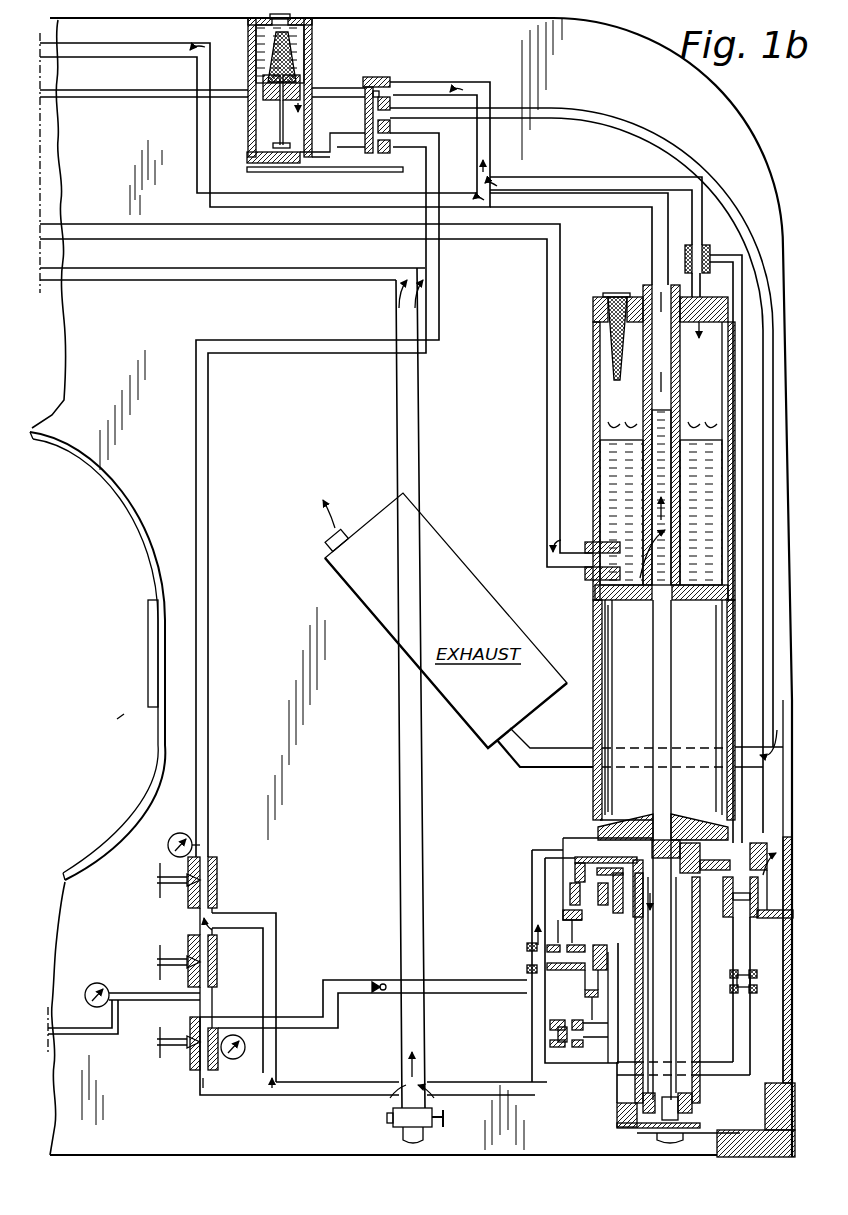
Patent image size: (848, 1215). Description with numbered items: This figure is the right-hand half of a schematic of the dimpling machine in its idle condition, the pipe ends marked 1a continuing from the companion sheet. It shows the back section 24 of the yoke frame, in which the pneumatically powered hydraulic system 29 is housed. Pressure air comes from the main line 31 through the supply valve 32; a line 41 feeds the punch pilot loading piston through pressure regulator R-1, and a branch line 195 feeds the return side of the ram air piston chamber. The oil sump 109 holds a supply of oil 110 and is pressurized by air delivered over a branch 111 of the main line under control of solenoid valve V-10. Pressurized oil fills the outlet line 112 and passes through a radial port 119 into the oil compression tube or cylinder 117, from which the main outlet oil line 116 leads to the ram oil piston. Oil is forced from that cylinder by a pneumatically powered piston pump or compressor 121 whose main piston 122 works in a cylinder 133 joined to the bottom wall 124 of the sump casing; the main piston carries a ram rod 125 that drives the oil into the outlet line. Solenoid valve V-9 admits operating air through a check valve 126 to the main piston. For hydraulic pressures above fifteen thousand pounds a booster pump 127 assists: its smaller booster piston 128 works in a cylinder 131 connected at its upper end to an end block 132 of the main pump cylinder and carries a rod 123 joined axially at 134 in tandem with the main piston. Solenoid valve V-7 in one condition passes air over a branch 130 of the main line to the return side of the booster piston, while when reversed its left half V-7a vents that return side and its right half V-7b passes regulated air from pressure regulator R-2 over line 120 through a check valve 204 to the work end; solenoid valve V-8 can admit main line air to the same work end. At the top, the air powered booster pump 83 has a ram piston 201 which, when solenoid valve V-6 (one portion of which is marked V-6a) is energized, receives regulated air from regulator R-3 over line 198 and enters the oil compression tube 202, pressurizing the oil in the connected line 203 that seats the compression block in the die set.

The section line 1a is at (40, 33).
The back section 24 is at (116, 480).
The hydraulic system 29 is at (604, 290).
The main line 31 is at (426, 1031).
The supply valve 32 is at (395, 1128).
The line 41 is at (92, 1033).
The booster pump 83 is at (320, 80).
The oil sump 109 is at (593, 372).
The supply of oil 110 is at (616, 473).
The branch 111 is at (648, 179).
The outlet line 112 is at (547, 297).
The main outlet oil line 116 is at (651, 226).
The oil compression tube or cylinder 117 is at (682, 381).
The radial port 119 is at (615, 678).
The line 120 is at (324, 982).
The piston pump or compressor 121 is at (591, 661).
The main piston 122 is at (615, 813).
The rod 123 is at (677, 1033).
The bottom wall 124 is at (714, 606).
The ram rod 125 is at (670, 697).
The check valve 126 is at (727, 915).
The booster pump 127 is at (715, 1050).
The booster piston 128 is at (697, 1087).
The branch 130 is at (532, 850).
The cylinder 131 is at (637, 1047).
The end block 132 is at (728, 841).
The cylinder 133 is at (613, 697).
The axial joint 134 is at (682, 816).
The branch line 195 is at (261, 280).
The line 198 is at (206, 439).
The ram piston 201 is at (258, 144).
The oil compression tube 202 is at (282, 56).
The line 203 is at (129, 98).
The check valve 204 is at (575, 892).
The pressure regulator R-1 is at (217, 962).
The pressure regulator R-2 is at (218, 1062).
The regulator R-3 is at (217, 876).
The solenoid valve V-6 is at (399, 75).
The valve flange V-6a is at (385, 76).
The solenoid valve V-7 is at (525, 951).
The left half of valve V-7 V-7a is at (526, 960).
The right half of valve V-7 V-7b is at (580, 995).
The solenoid valve V-8 is at (550, 1025).
The solenoid valve V-9 is at (752, 970).
The solenoid valve V-10 is at (707, 246).